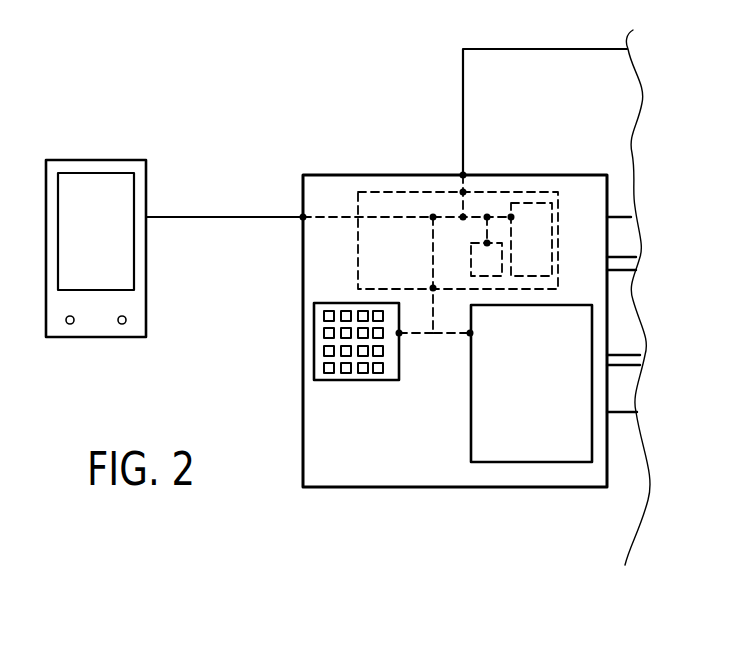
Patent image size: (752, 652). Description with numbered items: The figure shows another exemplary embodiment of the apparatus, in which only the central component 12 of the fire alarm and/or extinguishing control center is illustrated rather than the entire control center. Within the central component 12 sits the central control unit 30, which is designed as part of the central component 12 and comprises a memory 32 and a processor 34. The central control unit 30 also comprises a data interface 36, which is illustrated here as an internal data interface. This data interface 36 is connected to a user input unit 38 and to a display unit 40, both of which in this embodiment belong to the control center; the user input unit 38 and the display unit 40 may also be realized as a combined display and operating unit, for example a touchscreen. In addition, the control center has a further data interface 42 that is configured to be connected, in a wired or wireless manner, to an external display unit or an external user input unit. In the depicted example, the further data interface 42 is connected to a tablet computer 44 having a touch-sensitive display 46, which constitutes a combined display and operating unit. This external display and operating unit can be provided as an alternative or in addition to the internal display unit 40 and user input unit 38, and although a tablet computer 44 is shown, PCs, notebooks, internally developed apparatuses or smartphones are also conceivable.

The central component 12 is at (359, 175).
The central control unit 30 is at (510, 192).
The memory 32 is at (540, 203).
The processor 34 is at (485, 241).
The data interface 36 is at (433, 288).
The user input unit 38 is at (350, 381).
The display unit 40 is at (512, 463).
The further data interface 42 is at (303, 217).
The tablet computer 44 is at (86, 160).
The touch-sensitive display 46 is at (130, 173).